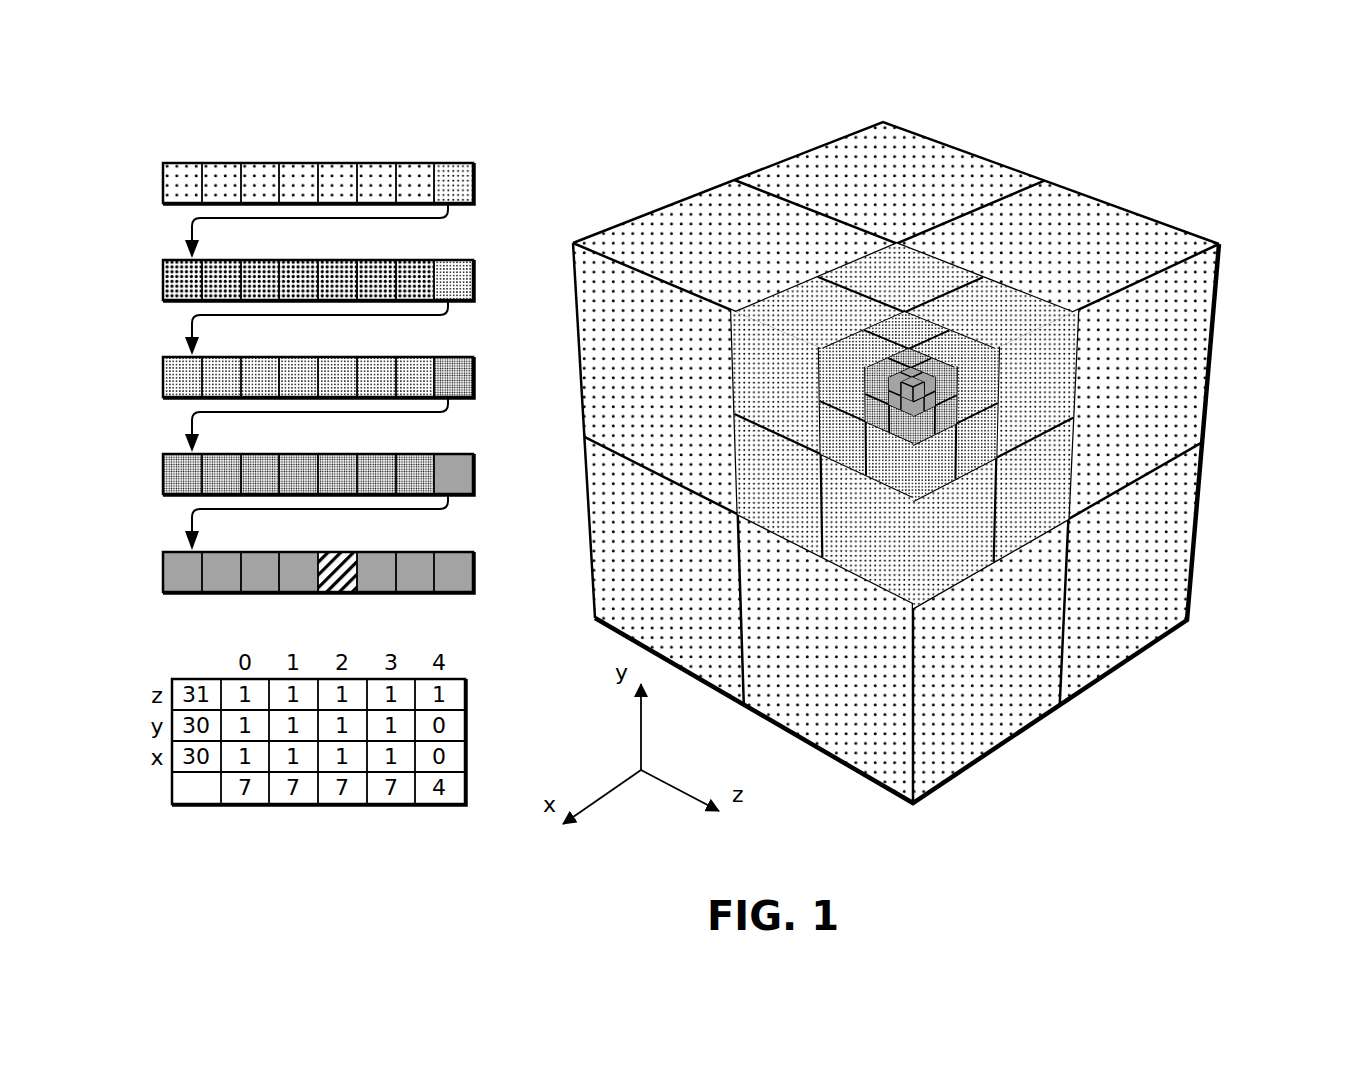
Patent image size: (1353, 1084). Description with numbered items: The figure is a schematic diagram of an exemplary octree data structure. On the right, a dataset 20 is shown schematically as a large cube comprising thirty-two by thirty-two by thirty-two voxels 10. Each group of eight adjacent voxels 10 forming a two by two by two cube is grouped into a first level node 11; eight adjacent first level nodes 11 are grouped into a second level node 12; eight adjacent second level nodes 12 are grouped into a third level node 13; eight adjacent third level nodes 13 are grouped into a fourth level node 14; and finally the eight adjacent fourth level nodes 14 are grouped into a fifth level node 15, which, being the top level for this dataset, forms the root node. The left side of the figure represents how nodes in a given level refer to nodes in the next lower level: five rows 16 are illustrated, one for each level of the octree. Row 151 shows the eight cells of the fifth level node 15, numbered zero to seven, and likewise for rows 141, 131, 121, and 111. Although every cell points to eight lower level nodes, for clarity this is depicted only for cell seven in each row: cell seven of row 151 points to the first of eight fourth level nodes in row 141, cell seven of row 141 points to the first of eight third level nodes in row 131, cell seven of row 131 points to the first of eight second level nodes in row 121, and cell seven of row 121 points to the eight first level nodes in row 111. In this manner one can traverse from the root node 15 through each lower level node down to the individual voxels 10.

The voxels 10 is at (913, 385).
The first level node 11 is at (1058, 312).
The second level node 12 is at (997, 354).
The third level node 13 is at (957, 408).
The fourth level node 14 is at (960, 487).
The fifth level node 15 is at (1199, 488).
The rows 16 is at (323, 118).
The dataset 20 is at (623, 174).
The row of first level nodes 111 is at (156, 565).
The row of second level nodes 121 is at (156, 467).
The row of third level nodes 131 is at (156, 370).
The row of fourth level nodes 141 is at (156, 273).
The row of the fifth level node 151 is at (156, 175).